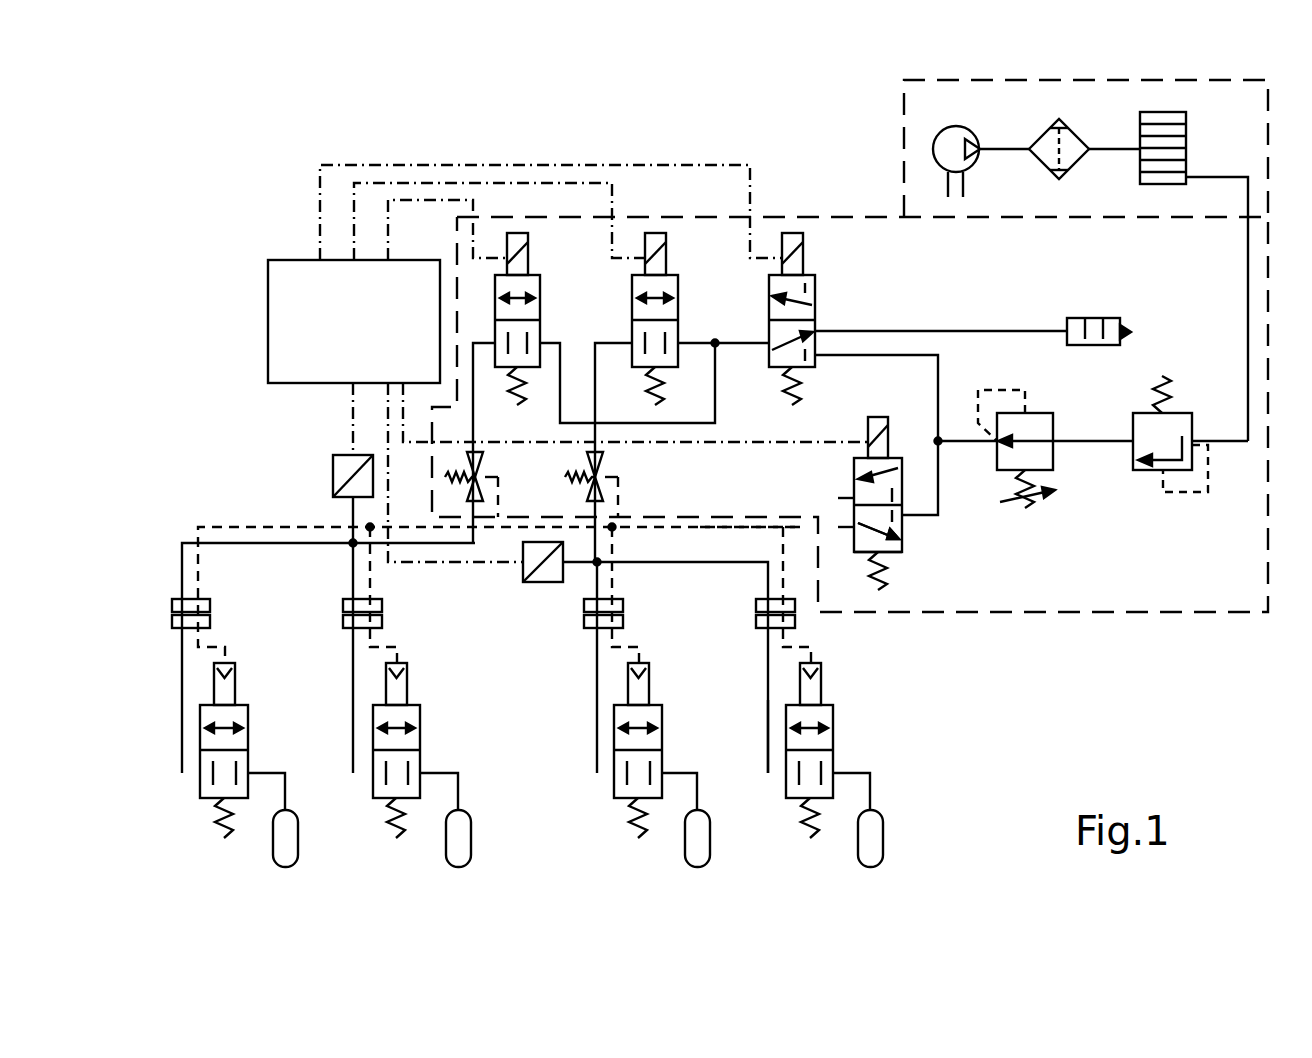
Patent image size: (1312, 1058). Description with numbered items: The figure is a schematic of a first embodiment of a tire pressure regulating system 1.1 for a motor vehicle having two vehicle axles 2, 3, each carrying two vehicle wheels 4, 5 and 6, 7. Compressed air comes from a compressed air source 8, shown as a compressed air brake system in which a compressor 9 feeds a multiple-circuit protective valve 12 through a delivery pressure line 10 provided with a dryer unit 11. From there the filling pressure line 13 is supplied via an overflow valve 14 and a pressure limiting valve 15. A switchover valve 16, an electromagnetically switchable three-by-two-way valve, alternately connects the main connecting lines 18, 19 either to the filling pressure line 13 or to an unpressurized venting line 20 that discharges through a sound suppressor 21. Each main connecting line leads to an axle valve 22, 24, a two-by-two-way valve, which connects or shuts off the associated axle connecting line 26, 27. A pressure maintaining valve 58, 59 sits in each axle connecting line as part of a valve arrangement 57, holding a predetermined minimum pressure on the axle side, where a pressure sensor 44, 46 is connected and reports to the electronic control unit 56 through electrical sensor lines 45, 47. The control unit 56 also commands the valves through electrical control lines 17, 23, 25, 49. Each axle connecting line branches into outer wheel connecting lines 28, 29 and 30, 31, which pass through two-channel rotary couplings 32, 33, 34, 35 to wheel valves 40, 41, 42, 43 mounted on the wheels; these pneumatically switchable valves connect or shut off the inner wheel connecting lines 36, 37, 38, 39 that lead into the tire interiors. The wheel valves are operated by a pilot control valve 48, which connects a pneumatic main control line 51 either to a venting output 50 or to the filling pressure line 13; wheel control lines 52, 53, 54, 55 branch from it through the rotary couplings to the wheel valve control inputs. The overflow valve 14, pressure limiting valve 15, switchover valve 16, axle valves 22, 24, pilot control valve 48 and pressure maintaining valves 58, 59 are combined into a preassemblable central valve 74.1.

The tire pressure regulating system 1.1 is at (250, 162).
The vehicle axle 2 is at (275, 604).
The vehicle axle 3 is at (690, 604).
The vehicle wheel 4 is at (285, 838).
The vehicle wheel 5 is at (458, 838).
The vehicle wheel 6 is at (697, 838).
The vehicle wheel 7 is at (870, 838).
The compressed air source 8 is at (904, 127).
The compressor 9 is at (940, 132).
The delivery pressure line 10 is at (1005, 150).
The dryer unit 11 is at (1040, 135).
The multiple-circuit protective valve 12 is at (1186, 150).
The filling pressure line 13 is at (963, 444).
The overflow valve 14 is at (1133, 428).
The pressure limiting valve 15 is at (1054, 462).
The switchover valve 16 is at (816, 312).
The electrical control line 17 is at (675, 164).
The main connecting line 18 is at (716, 393).
The main connecting line 19 is at (712, 340).
The venting line 20 is at (952, 330).
The sound suppressor 21 is at (1093, 318).
The axle valve 22 is at (541, 312).
The electrical control line 23 is at (428, 199).
The axle valve 24 is at (679, 312).
The electrical control line 25 is at (535, 182).
The axle connecting line 26 is at (483, 340).
The axle connecting line 27 is at (592, 390).
The outer wheel connecting line 28 is at (222, 540).
The outer wheel connecting line 29 is at (353, 702).
The outer wheel connecting line 30 is at (597, 660).
The outer wheel connecting line 31 is at (768, 702).
The two-channel rotary coupling 32 is at (211, 605).
The two-channel rotary coupling 33 is at (343, 605).
The two-channel rotary coupling 34 is at (624, 605).
The two-channel rotary coupling 35 is at (757, 605).
The inner wheel connecting line 36 is at (287, 790).
The inner wheel connecting line 37 is at (460, 790).
The inner wheel connecting line 38 is at (699, 790).
The inner wheel connecting line 39 is at (872, 790).
The wheel valve 40 is at (249, 742).
The wheel valve 41 is at (421, 742).
The wheel valve 42 is at (663, 742).
The wheel valve 43 is at (834, 742).
The pressure sensor 44 is at (333, 478).
The electrical sensor line 45 is at (353, 422).
The pressure sensor 46 is at (540, 583).
The electrical sensor line 47 is at (463, 565).
The pilot control valve 48 is at (854, 490).
The electrical control line 49 is at (680, 446).
The venting output 50 is at (903, 538).
The main control line 51 is at (800, 524).
The wheel control line 52 is at (265, 524).
The wheel control line 53 is at (372, 562).
The wheel control line 54 is at (615, 548).
The wheel control line 55 is at (780, 548).
The electronic control unit 56 is at (268, 325).
The valve arrangement 57 is at (580, 468).
The pressure maintaining valve 58 is at (467, 488).
The pressure maintaining valve 59 is at (587, 492).
The central valve 74.1 is at (1078, 614).